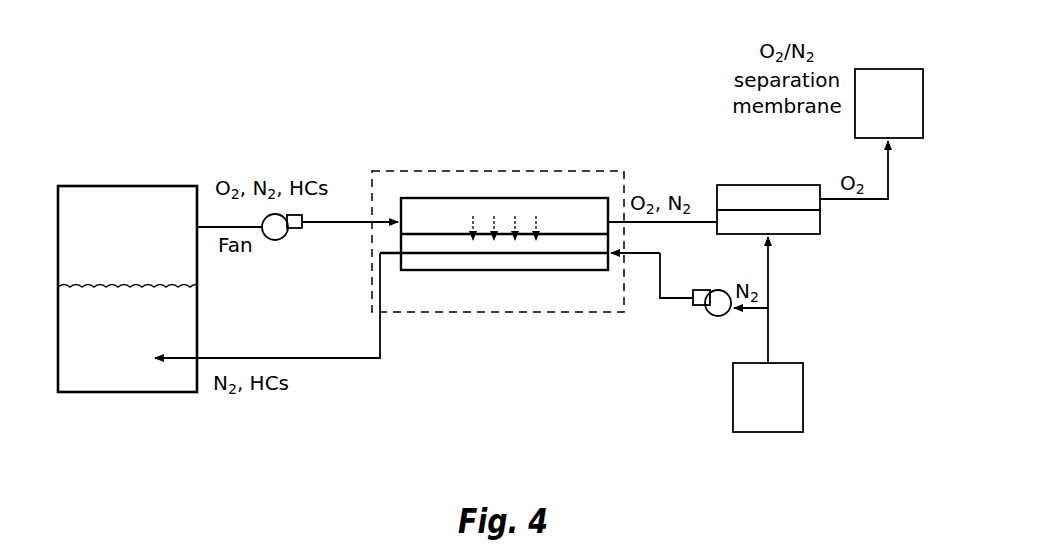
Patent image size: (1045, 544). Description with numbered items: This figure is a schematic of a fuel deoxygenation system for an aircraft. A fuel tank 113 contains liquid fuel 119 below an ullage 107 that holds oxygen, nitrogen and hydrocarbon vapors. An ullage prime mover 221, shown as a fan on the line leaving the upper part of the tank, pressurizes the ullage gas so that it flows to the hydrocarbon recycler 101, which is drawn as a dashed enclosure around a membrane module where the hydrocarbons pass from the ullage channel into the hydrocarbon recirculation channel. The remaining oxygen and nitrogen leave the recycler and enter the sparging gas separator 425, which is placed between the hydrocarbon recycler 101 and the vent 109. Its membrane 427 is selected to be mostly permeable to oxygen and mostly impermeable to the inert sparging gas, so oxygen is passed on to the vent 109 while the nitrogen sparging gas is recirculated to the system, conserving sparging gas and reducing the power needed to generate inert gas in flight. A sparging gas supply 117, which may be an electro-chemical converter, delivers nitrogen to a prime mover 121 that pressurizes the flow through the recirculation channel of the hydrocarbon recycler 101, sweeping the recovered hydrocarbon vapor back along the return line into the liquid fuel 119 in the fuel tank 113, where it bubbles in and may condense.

The fuel tank 113 is at (82, 186).
The ullage 107 is at (127, 258).
The liquid fuel 119 is at (127, 332).
The ullage prime mover 221 is at (279, 240).
The hydrocarbon recycler 101 is at (460, 186).
The membrane 427 is at (789, 209).
The sparging gas separator 425 is at (820, 223).
The vent 109 is at (889, 103).
The sparging gas supply 117 is at (768, 334).
The prime mover 121 is at (712, 317).